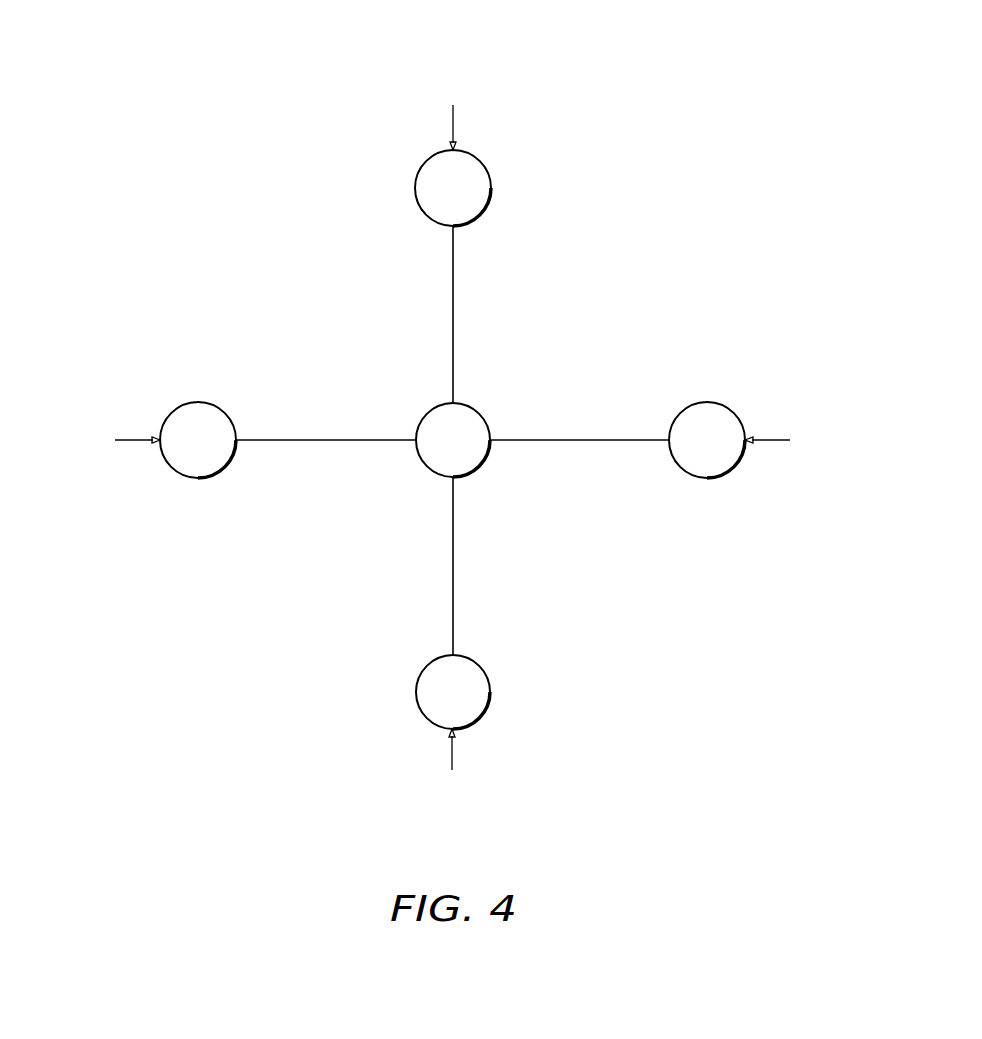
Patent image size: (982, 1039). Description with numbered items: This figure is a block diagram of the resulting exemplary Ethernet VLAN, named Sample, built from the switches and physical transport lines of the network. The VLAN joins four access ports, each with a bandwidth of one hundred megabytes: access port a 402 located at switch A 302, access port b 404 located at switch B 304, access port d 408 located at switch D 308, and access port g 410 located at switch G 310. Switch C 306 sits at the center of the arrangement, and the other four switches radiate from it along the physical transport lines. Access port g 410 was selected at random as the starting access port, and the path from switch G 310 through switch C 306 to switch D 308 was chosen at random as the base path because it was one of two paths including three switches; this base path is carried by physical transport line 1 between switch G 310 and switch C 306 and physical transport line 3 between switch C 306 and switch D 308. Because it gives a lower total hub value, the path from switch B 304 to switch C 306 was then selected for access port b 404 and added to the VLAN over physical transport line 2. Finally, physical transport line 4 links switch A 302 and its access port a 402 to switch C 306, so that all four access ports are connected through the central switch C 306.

The switch A 302 is at (492, 692).
The switch B 304 is at (490, 174).
The switch C 306 is at (480, 412).
The switch D 308 is at (705, 402).
The switch G 310 is at (198, 402).
The access port a 402 is at (498, 793).
The access port b 404 is at (458, 70).
The access port d 408 is at (853, 428).
The access port g 410 is at (75, 428).
The physical transport line 1 is at (326, 426).
The physical transport line 2 is at (440, 314).
The physical transport line 3 is at (579, 426).
The physical transport line 4 is at (464, 566).